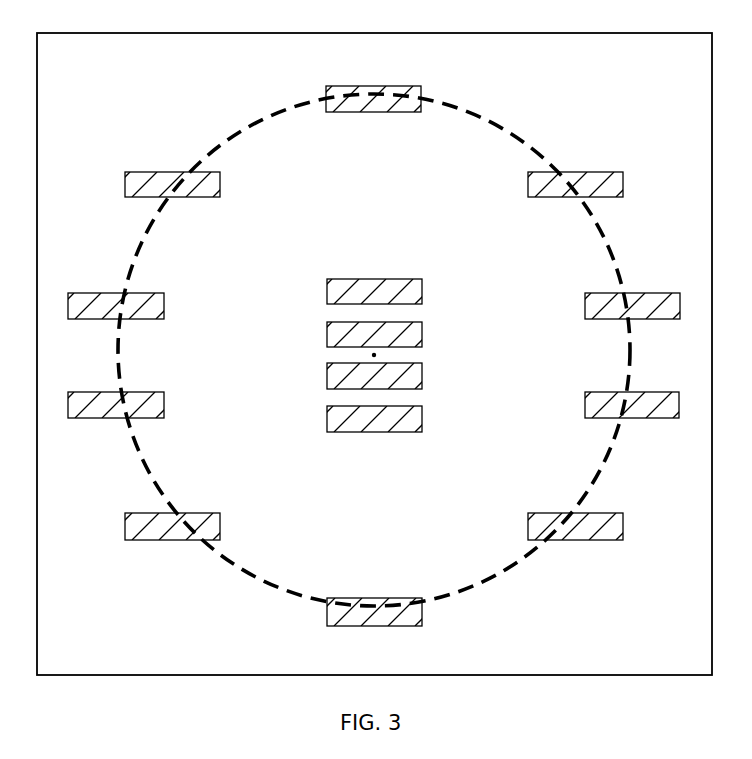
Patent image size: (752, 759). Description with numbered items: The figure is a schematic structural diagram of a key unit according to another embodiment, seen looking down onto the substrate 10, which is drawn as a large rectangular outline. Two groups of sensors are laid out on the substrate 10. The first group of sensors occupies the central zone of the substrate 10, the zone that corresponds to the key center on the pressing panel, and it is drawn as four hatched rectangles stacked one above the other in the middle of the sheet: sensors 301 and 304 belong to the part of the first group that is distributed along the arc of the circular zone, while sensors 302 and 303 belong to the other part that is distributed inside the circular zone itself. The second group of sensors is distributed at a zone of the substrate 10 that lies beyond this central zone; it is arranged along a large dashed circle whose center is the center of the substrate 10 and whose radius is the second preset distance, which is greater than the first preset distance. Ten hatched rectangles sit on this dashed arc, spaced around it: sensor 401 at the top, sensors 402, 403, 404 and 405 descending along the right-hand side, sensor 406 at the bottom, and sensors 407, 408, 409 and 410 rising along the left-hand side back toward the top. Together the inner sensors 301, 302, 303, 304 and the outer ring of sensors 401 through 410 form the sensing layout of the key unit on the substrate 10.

The substrate 10 is at (387, 33).
The sensor 301 is at (422, 288).
The sensor 302 is at (422, 331).
The sensor 303 is at (422, 372).
The sensor 304 is at (422, 415).
The peripheral test structure 401 is at (357, 86).
The peripheral test structure 402 is at (550, 172).
The peripheral test structure 403 is at (617, 293).
The peripheral test structure 404 is at (613, 392).
The peripheral test structure 405 is at (558, 513).
The peripheral test structure 406 is at (345, 600).
The peripheral test structure 407 is at (150, 513).
The peripheral test structure 408 is at (97, 392).
The peripheral test structure 409 is at (93, 293).
The peripheral test structure 410 is at (153, 172).